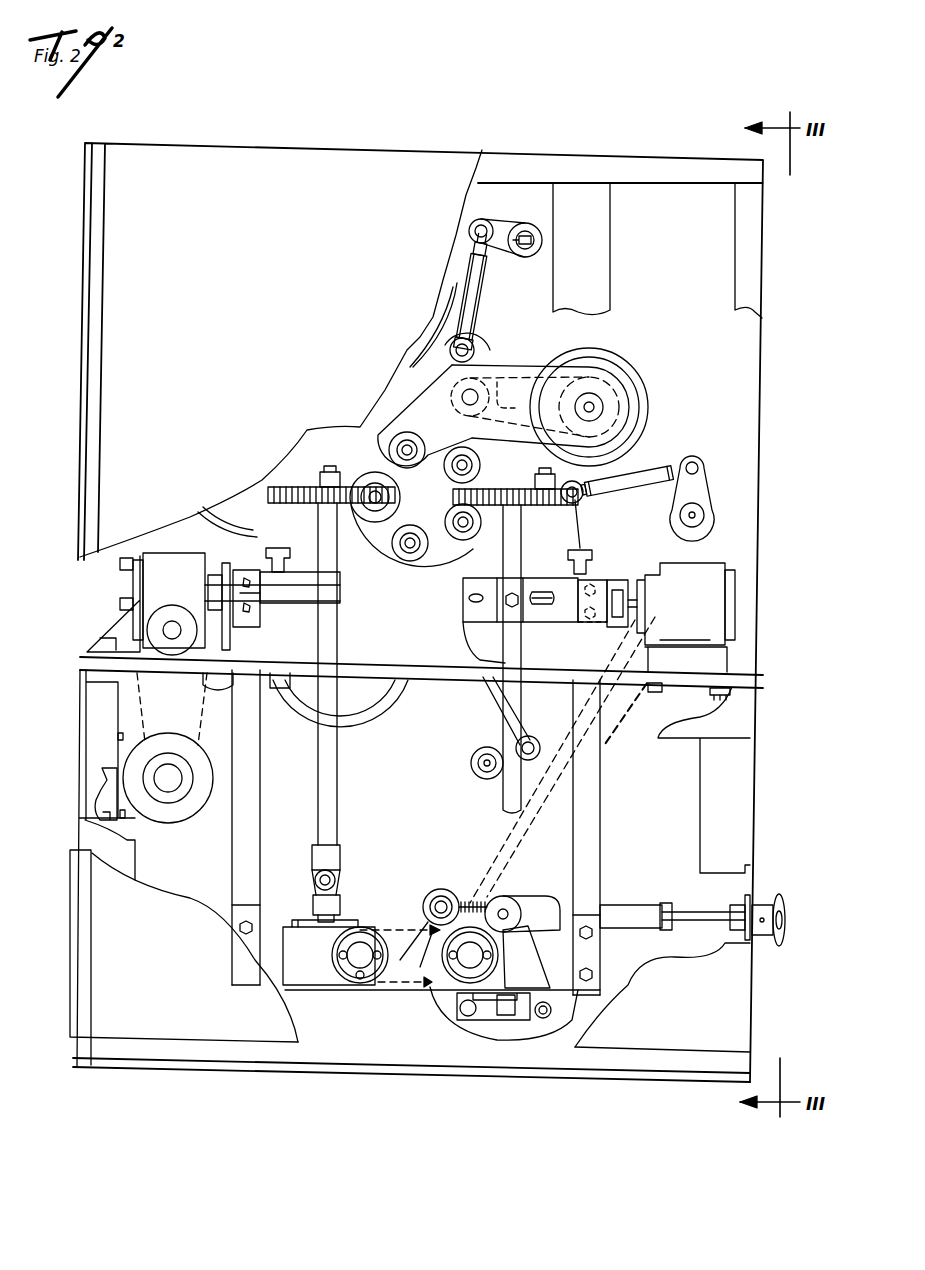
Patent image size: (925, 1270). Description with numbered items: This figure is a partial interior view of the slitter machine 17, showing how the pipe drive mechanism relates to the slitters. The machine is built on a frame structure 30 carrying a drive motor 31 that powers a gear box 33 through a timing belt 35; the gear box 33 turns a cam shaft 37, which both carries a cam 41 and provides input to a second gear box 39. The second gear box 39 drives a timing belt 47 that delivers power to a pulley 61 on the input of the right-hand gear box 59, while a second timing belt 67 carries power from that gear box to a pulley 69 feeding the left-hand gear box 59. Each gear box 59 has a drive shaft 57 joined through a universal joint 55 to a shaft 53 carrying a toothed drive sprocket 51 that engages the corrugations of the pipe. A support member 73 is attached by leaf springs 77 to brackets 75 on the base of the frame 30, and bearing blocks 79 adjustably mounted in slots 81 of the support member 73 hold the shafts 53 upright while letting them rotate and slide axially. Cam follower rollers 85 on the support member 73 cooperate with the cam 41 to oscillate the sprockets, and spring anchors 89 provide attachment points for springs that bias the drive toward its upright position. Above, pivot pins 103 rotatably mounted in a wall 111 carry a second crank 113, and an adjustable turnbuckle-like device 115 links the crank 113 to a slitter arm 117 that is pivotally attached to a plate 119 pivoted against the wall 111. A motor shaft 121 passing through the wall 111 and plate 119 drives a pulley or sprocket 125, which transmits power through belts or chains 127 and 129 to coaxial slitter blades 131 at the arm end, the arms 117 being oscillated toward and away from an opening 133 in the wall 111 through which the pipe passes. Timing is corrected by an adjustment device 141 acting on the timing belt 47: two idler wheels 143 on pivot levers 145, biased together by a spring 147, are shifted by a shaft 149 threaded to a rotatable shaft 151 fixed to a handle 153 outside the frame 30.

The slitter machine 17 is at (334, 136).
The frame structure 30 is at (745, 678).
The drive motor 31 is at (172, 812).
The gear box 33 is at (170, 560).
The timing belt 35 is at (140, 715).
The cam shaft 37 is at (342, 598).
The second gear box 39 is at (690, 582).
The cam 41 is at (225, 562).
The timing belt 47 is at (617, 733).
The drive sprockets 51 is at (292, 486).
The shaft 53 is at (503, 718).
The universal joint 55 is at (340, 860).
The drive shaft 57 is at (338, 895).
The gear box 59 is at (305, 975).
The pulley 61 is at (455, 978).
The timing belt 67 is at (412, 925).
The pulley 69 is at (366, 972).
The support member 73 is at (540, 578).
The brackets 75 is at (258, 935).
The leaf springs 77 is at (260, 790).
The bearing blocks 79 is at (338, 576).
The slots 81 is at (538, 608).
The cam followers or rollers 85 is at (618, 588).
The spring anchors 89 is at (280, 548).
The pivot pins 103 is at (527, 233).
The wall 111 is at (705, 304).
The second crank 113 is at (492, 246).
The adjustable turnbuckle-like device 115 is at (480, 304).
The slitter arm 117 is at (483, 370).
The plate 119 is at (625, 380).
The motor shaft 121 is at (620, 400).
The pulley or sprocket 125 is at (618, 420).
The belt or chain 127 is at (521, 400).
The belt or chain 129 is at (442, 388).
The slitter blades 131 is at (418, 468).
The opening 133 is at (372, 472).
The adjustment device 141 is at (525, 875).
The idler wheels 143 is at (438, 890).
The pivot levers 145 is at (432, 940).
The spring 147 is at (460, 898).
The shaft 149 is at (650, 912).
The rotatable shaft 151 is at (690, 922).
The handle 153 is at (765, 905).